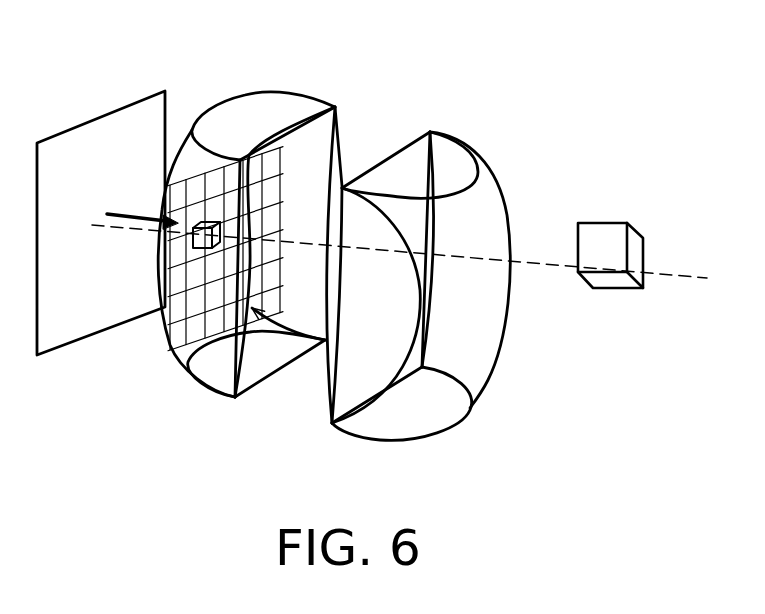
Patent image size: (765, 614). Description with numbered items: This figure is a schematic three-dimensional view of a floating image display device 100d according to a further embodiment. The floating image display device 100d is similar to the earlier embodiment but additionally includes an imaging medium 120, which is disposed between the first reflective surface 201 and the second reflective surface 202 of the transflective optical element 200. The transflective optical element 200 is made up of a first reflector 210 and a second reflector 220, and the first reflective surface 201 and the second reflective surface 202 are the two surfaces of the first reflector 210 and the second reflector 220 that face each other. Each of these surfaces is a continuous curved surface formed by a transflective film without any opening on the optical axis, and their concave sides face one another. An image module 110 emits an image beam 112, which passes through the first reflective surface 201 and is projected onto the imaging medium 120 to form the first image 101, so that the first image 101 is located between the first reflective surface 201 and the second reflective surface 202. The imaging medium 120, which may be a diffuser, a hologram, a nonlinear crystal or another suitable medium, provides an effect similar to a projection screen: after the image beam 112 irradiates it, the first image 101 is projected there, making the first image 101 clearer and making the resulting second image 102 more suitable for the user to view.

The floating image display device 100d is at (677, 490).
The image module 110 is at (95, 133).
The image beam 112 is at (127, 213).
The first image 101 is at (166, 258).
The imaging medium 120 is at (182, 278).
The transflective optical element 200 is at (322, 95).
The first reflector 210 is at (238, 124).
The first reflective surface 201 is at (288, 336).
The second reflector 220 is at (451, 160).
The second reflective surface 202 is at (418, 225).
The second image 102 is at (603, 236).